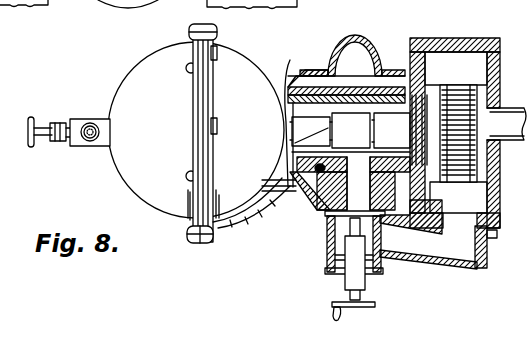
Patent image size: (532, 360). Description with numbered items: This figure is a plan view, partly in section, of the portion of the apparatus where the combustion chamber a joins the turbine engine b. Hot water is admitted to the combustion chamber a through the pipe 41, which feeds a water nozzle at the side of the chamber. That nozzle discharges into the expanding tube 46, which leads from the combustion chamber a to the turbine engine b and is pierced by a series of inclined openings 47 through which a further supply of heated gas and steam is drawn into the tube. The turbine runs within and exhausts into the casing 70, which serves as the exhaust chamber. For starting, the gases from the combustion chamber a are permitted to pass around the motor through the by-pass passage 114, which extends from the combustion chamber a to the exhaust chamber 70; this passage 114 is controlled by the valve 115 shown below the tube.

The combustion chamber a is at (128, 86).
The pipe 41 is at (80, 147).
The expanding tube 46 is at (310, 120).
The inclined openings 47 is at (294, 151).
The casing 70 is at (463, 58).
The turbine engine b is at (472, 108).
The valve 115 is at (322, 230).
The passage 114 is at (443, 250).